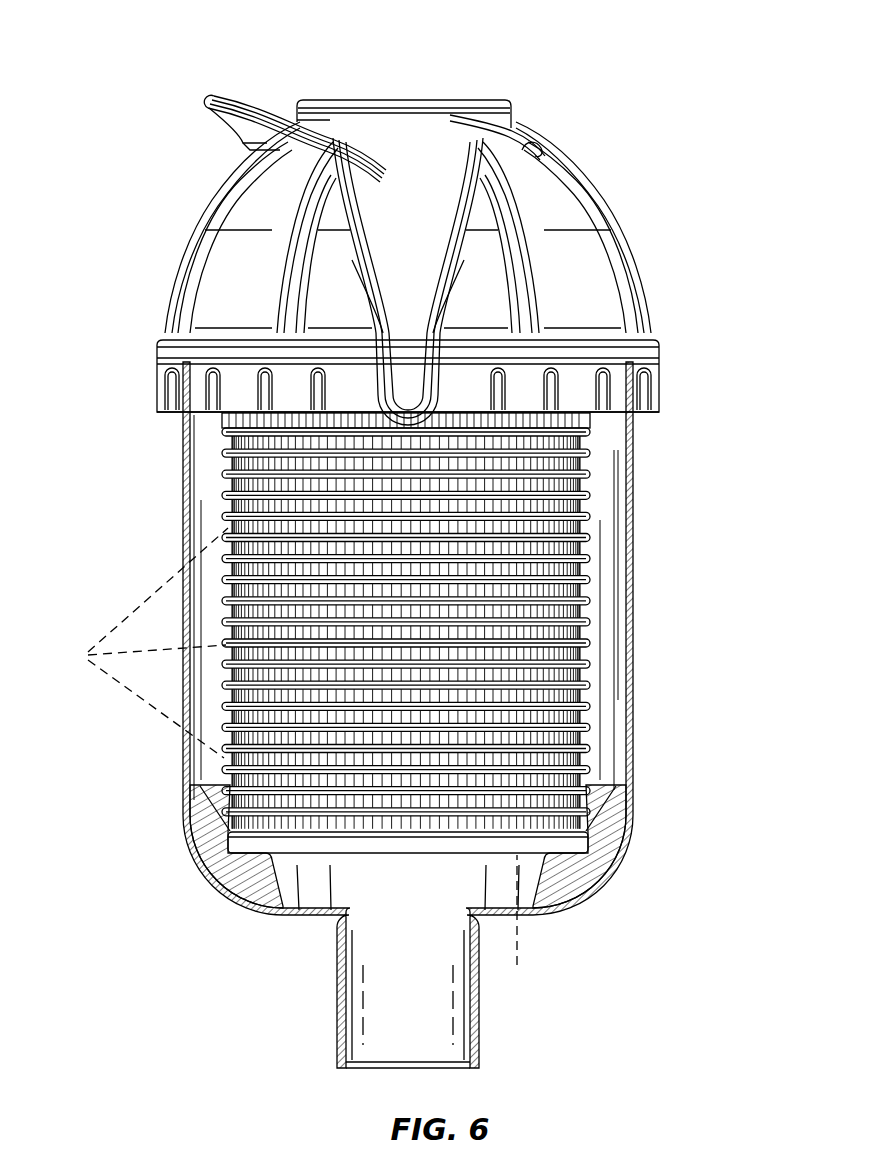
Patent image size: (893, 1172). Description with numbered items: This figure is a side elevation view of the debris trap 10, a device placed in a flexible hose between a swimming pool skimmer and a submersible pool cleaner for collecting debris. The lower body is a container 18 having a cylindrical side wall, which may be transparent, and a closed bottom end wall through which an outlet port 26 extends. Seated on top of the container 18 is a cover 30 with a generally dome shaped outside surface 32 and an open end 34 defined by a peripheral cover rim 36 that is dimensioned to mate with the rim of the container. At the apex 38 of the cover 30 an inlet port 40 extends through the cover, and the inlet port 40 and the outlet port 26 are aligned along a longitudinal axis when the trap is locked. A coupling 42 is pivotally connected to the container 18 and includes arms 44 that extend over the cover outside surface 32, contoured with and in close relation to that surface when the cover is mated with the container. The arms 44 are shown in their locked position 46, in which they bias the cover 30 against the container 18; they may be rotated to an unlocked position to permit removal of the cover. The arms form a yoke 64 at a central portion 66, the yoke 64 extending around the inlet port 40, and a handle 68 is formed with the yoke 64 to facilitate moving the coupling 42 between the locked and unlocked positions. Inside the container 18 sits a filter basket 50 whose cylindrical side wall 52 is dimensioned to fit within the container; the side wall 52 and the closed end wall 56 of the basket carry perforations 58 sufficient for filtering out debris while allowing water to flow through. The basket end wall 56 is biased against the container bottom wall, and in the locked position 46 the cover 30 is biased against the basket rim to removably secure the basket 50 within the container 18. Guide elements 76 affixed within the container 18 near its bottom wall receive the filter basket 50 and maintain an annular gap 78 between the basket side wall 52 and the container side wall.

The debris trap 10 is at (678, 260).
The container 18 is at (640, 626).
The outlet port 26 is at (358, 980).
The cover 30 is at (182, 267).
The outside surface 32 is at (541, 274).
The open end 34 is at (613, 350).
The peripheral cover rim 36 is at (218, 355).
The apex 38 is at (532, 148).
The inlet port 40 is at (440, 100).
The coupling 42 is at (401, 145).
The arms 44 is at (405, 243).
The locked position 46 is at (185, 133).
The filter basket 50 is at (560, 698).
The side wall 52 is at (592, 565).
The closed end wall 56 is at (414, 923).
The perforations 58 is at (141, 643).
The yoke 64 is at (310, 128).
The central portion 66 is at (460, 140).
The handle 68 is at (222, 97).
The guide elements 76 is at (230, 883).
The annular gap 78 is at (605, 670).